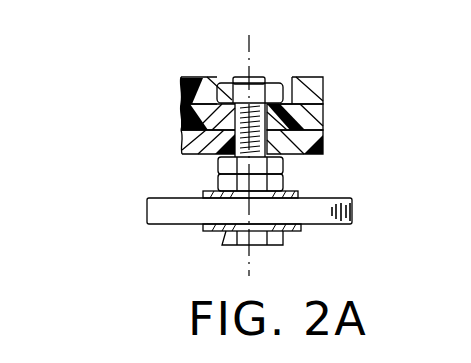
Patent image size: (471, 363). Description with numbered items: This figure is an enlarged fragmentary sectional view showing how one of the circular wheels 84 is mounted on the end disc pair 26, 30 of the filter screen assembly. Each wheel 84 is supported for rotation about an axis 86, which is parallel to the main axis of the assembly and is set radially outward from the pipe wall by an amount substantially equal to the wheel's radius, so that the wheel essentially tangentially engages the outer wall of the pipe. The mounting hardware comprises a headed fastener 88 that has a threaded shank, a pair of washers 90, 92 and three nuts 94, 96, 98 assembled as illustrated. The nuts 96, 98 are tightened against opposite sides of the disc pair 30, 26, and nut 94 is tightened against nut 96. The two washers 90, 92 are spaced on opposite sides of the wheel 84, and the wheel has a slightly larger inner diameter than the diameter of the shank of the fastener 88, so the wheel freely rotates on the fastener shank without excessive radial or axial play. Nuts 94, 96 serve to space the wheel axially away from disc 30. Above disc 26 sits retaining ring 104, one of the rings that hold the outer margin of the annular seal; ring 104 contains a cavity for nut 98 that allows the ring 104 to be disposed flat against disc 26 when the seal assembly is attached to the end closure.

The disc 26 is at (322, 118).
The disc 30 is at (322, 147).
The circular wheel 84 is at (146, 212).
The axis 86 is at (247, 48).
The headed fastener 88 is at (222, 246).
The washer 90 is at (302, 231).
The washer 92 is at (295, 194).
The nut 94 is at (217, 184).
The nut 96 is at (217, 165).
The nut 98 is at (266, 81).
The retaining ring 104 is at (323, 86).